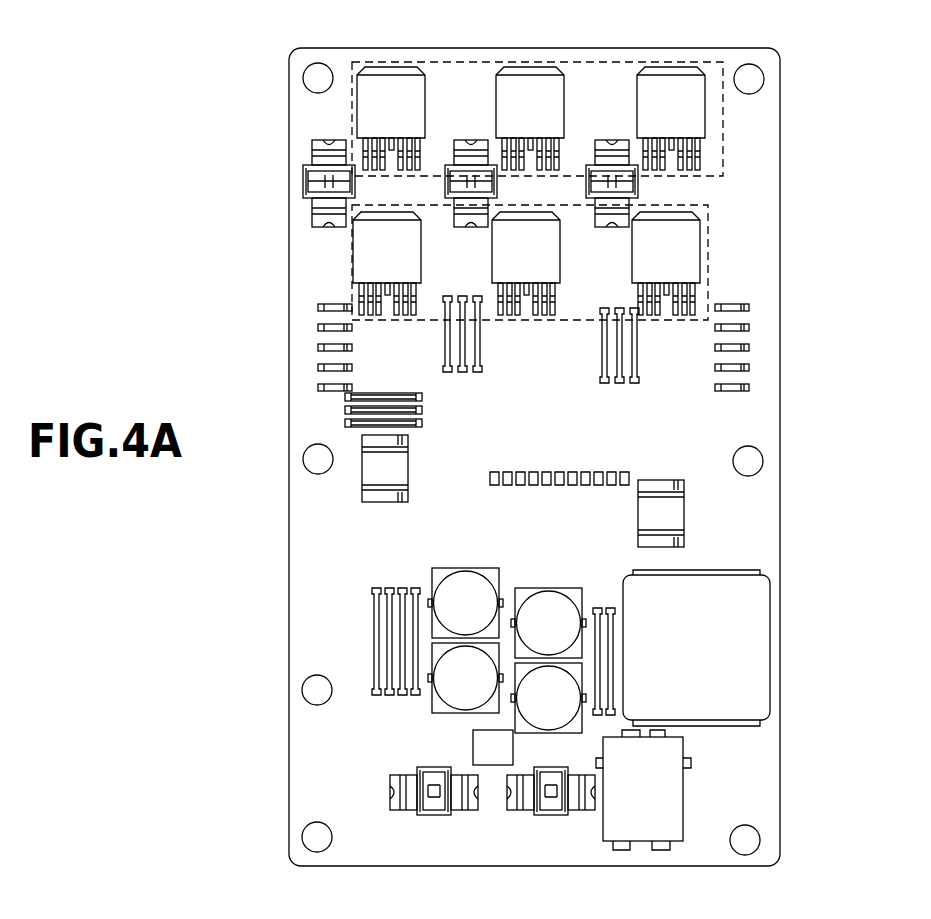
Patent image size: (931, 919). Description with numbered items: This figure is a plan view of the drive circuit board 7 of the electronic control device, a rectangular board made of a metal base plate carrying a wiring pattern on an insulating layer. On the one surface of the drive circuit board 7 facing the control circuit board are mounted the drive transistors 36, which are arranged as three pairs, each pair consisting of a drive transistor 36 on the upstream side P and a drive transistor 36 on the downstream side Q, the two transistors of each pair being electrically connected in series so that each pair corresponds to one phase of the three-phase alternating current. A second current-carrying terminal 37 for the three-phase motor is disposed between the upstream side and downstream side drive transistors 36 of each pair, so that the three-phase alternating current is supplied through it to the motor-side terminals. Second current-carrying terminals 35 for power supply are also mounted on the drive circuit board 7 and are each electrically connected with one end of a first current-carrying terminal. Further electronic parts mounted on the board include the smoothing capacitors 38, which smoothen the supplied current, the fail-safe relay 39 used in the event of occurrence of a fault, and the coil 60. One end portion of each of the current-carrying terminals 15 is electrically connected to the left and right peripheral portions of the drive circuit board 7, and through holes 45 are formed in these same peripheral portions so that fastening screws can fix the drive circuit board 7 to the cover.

The drive circuit board 7 is at (793, 136).
The current-carrying terminals 15 is at (318, 387).
The second current-carrying terminals for power supply 35 is at (433, 797).
The drive transistors 36 is at (518, 95).
The second current-carrying terminals for the three-phase motor 37 is at (460, 183).
The smoothing capacitors 38 is at (460, 678).
The fail-safe relay 39 is at (657, 786).
The through holes 45 is at (318, 79).
The coil 60 is at (752, 663).
The upstream side P is at (725, 122).
The downstream side Q is at (712, 250).